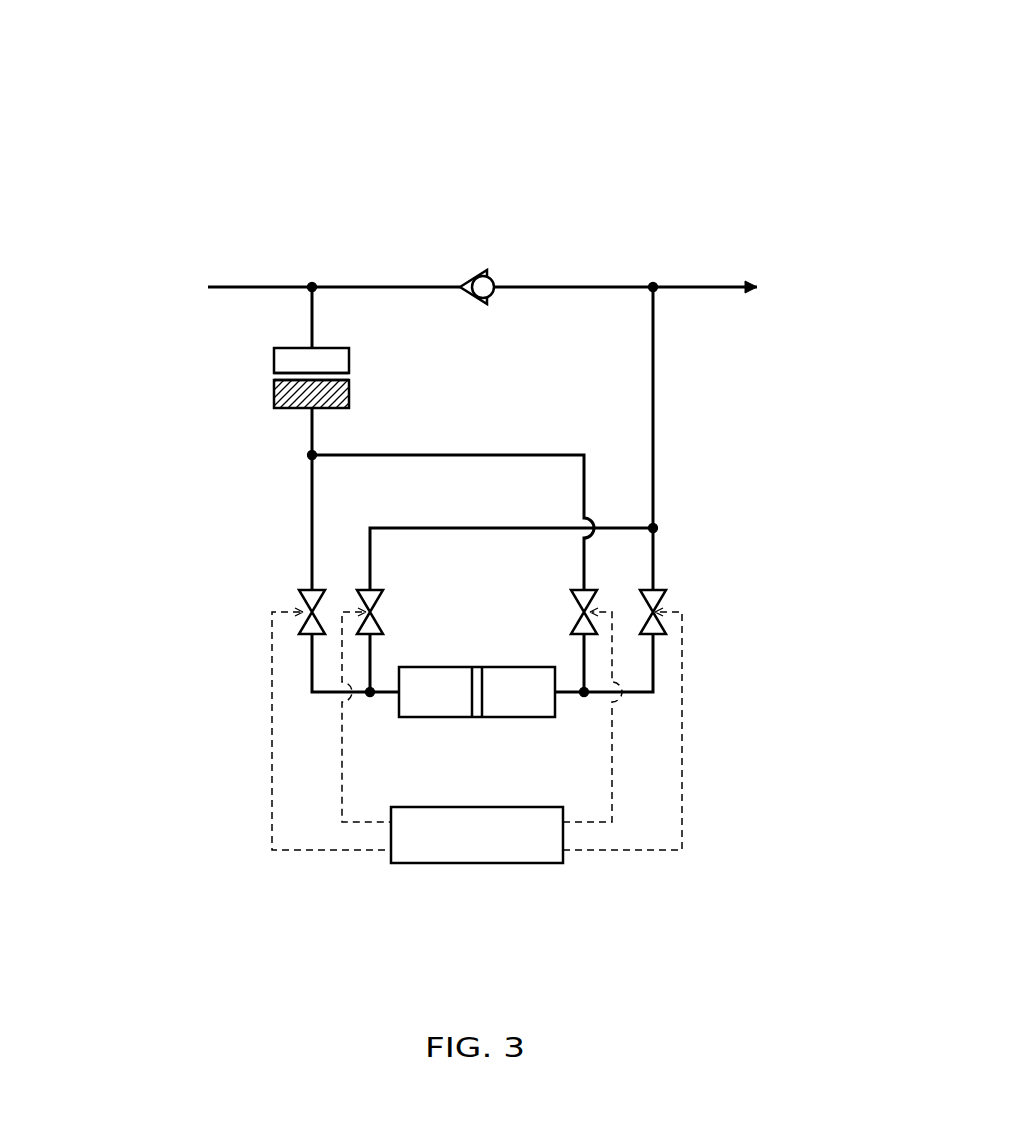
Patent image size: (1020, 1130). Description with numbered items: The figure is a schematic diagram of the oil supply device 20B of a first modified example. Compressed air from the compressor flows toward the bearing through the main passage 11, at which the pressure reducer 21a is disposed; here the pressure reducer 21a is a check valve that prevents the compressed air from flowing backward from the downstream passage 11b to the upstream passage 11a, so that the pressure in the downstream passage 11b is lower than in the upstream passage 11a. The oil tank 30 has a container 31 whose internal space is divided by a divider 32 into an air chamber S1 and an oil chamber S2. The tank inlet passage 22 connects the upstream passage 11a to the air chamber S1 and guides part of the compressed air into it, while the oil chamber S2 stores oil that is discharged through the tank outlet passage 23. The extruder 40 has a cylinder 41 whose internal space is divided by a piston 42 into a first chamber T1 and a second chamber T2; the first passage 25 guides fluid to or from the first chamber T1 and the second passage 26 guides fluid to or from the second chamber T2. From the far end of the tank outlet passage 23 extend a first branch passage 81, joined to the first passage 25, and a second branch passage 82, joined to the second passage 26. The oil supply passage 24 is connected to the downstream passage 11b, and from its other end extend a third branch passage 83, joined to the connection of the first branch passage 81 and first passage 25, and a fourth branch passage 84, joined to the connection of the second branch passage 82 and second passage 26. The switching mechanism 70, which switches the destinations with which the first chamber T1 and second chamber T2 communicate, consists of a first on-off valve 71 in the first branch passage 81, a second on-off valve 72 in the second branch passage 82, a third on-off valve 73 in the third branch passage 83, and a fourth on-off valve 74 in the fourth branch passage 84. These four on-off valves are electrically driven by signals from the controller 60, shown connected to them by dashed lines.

The oil supply device 20B is at (590, 130).
The main passage 11 is at (707, 285).
The upstream passage 11a is at (350, 285).
The downstream passage 11b is at (600, 285).
The pressure reducer 21a is at (473, 270).
The tank inlet passage 22 is at (310, 320).
The tank outlet passage 23 is at (310, 445).
The oil supply passage 24 is at (657, 380).
The first passage 25 is at (385, 698).
The second passage 26 is at (560, 694).
The oil tank 30 is at (262, 360).
The container 31 is at (330, 345).
The divider 32 is at (273, 378).
The air chamber S1 is at (337, 363).
The oil chamber S2 is at (350, 393).
The extruder 40 is at (555, 733).
The cylinder 41 is at (513, 667).
The piston 42 is at (477, 718).
The first chamber T1 is at (423, 718).
The second chamber T2 is at (515, 718).
The controller 60 is at (477, 865).
The switching mechanism 70 is at (800, 612).
The first on-off valve 71 is at (300, 590).
The second on-off valve 72 is at (578, 605).
The third on-off valve 73 is at (377, 600).
The fourth on-off valve 74 is at (665, 588).
The first branch passage 81 is at (312, 540).
The second branch passage 82 is at (503, 455).
The third branch passage 83 is at (477, 528).
The fourth branch passage 84 is at (655, 551).